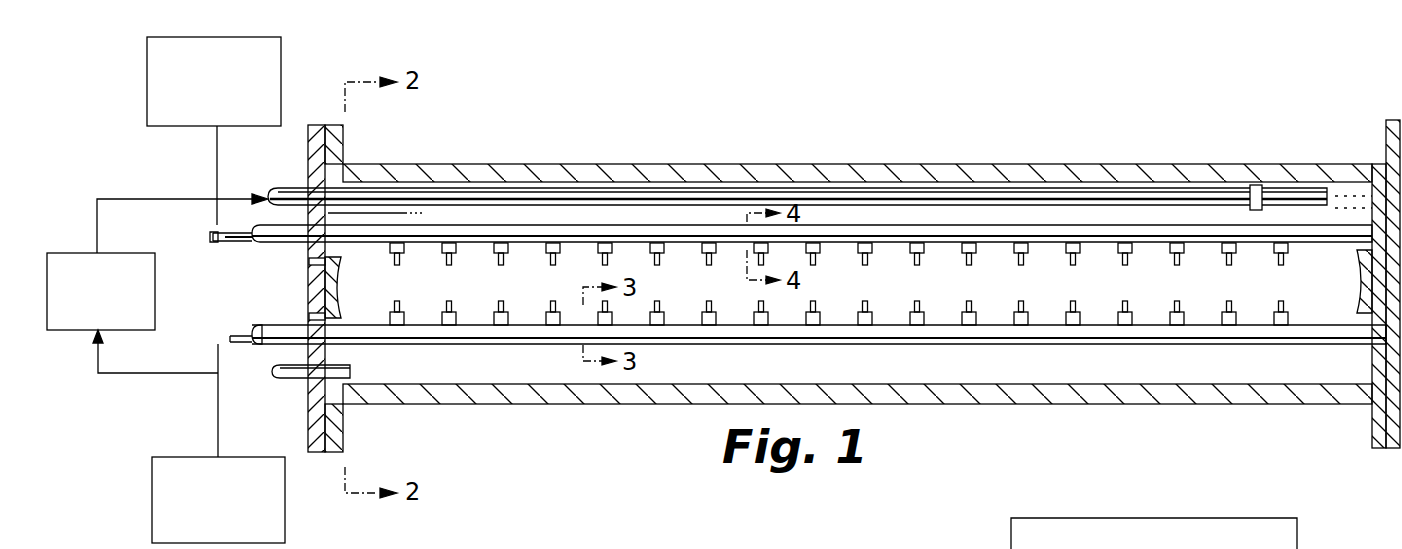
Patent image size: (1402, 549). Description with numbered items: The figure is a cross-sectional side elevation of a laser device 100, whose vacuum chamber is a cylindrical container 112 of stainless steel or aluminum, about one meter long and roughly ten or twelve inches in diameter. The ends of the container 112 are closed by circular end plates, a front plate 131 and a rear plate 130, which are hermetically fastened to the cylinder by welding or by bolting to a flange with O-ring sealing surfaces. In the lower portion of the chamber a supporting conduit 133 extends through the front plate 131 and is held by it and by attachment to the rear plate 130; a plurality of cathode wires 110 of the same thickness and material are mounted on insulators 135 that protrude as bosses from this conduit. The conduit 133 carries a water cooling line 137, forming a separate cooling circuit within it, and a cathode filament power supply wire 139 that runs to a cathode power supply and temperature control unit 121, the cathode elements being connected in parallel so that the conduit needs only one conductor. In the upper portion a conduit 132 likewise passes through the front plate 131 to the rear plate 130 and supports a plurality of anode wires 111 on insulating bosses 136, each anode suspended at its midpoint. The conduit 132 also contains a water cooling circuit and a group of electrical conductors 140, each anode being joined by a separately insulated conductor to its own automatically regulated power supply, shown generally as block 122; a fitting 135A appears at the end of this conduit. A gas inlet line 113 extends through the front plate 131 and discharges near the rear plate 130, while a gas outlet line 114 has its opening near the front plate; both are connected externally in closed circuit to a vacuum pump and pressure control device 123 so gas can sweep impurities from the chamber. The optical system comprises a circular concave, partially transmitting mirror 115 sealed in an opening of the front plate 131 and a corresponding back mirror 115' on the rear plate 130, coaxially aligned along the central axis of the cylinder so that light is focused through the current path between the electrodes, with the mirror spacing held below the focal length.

The laser device 100 is at (847, 166).
The cathode wires 110 is at (1128, 302).
The anode wires 111 is at (870, 258).
The cylindrical container 112 is at (1028, 164).
The gas inlet line 113 is at (508, 199).
The gas outlet line 114 is at (292, 378).
The mirror 115 is at (353, 287).
The back mirror 115' is at (1340, 281).
The cathode power supply and temperature control unit 121 is at (237, 457).
The automatically regulated power supplies 122 is at (147, 66).
The vacuum pump and pressure control device 123 is at (119, 253).
The rear plate 130 is at (1392, 120).
The front plate 131 is at (317, 125).
The conduit 132 is at (936, 222).
The supporting conduit 133 is at (1095, 344).
The insulators 135 is at (1180, 312).
The feedthrough end 135A is at (212, 238).
The insulating bosses 136 is at (978, 253).
The water cooling line 137 is at (233, 340).
The cathode filament power supply wire 139 is at (218, 337).
The electrical conductors 140 is at (242, 244).